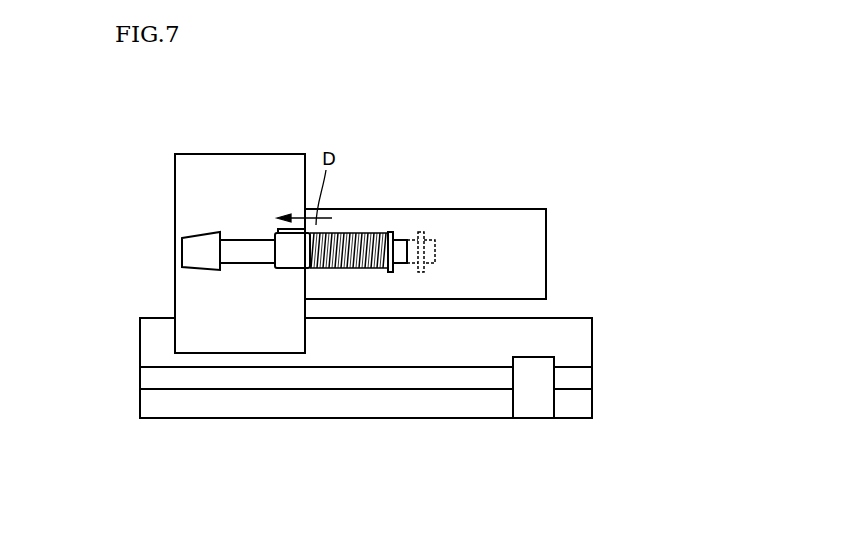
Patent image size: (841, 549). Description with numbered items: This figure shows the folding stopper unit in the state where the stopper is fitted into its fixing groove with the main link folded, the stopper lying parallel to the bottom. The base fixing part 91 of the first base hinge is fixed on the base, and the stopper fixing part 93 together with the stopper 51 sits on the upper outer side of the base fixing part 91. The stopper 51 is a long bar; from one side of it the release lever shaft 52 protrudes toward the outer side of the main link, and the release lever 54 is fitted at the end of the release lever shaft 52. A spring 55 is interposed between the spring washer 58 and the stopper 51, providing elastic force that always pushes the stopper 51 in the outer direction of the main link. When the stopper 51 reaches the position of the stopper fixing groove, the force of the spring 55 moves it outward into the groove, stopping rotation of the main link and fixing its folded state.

The base fixing part 91 is at (333, 407).
The stopper fixing part 93 is at (200, 277).
The release lever 54 is at (200, 240).
The release lever shaft 52 is at (243, 247).
The stopper 51 is at (290, 272).
The spring 55 is at (341, 237).
The spring washer 58 is at (391, 232).